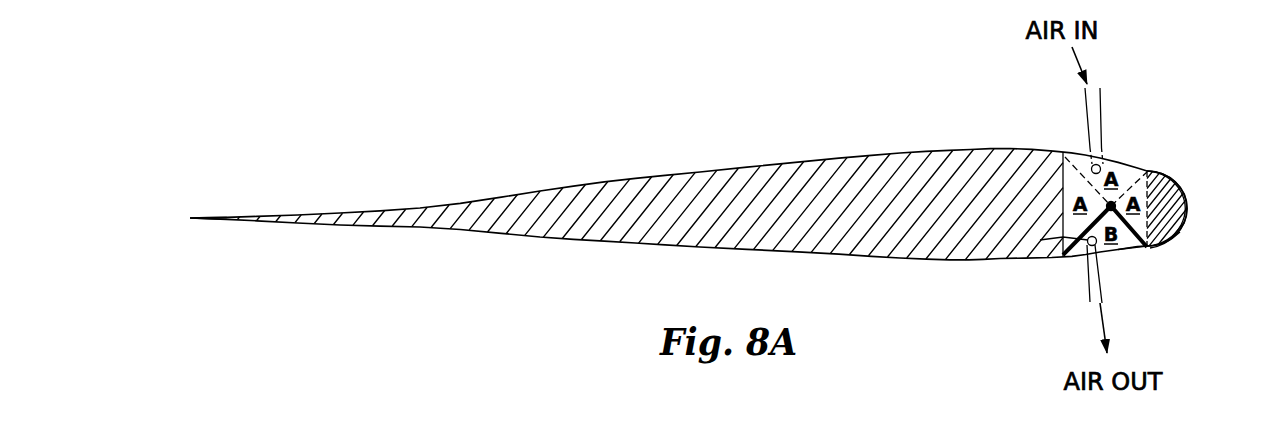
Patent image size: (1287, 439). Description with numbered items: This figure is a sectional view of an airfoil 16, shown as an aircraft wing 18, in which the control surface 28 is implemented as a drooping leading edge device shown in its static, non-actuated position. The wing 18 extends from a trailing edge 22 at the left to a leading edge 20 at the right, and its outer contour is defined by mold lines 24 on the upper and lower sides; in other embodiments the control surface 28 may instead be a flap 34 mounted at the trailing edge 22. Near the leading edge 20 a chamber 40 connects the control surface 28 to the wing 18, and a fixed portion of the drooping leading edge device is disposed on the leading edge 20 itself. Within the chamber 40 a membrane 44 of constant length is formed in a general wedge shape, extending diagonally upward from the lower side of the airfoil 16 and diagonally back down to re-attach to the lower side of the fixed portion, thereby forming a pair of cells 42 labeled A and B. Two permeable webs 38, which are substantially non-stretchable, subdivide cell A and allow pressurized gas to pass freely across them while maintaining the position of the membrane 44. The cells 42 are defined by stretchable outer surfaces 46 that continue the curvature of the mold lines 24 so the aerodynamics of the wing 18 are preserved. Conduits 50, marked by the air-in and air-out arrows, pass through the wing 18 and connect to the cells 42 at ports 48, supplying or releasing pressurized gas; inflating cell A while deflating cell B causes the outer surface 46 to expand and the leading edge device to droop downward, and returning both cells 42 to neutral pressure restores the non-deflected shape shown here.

The airfoil 16 is at (688, 203).
The wing 18 is at (688, 203).
The leading edge 20 is at (1188, 205).
The trailing edge 22 is at (188, 218).
The mold lines 24 is at (673, 175).
The control surface 28 is at (1180, 231).
The flap 34 is at (1174, 183).
The permeable webs 38 is at (1064, 166).
The chamber 40 is at (1175, 153).
The cells 42 is at (1128, 250).
The membrane 44 is at (1053, 239).
The outer surfaces 46 is at (1114, 150).
The ports 48 is at (1090, 166).
The conduits 50 is at (1100, 101).